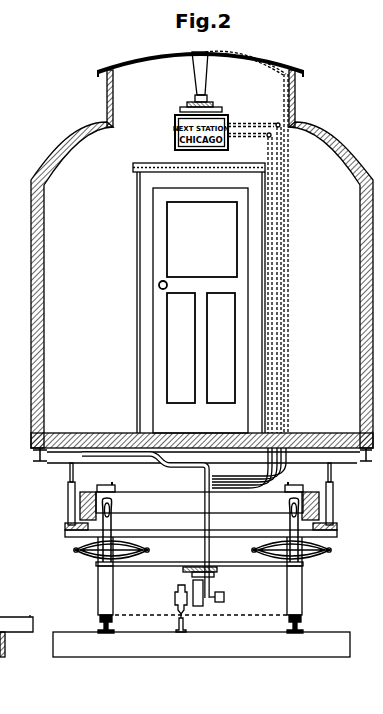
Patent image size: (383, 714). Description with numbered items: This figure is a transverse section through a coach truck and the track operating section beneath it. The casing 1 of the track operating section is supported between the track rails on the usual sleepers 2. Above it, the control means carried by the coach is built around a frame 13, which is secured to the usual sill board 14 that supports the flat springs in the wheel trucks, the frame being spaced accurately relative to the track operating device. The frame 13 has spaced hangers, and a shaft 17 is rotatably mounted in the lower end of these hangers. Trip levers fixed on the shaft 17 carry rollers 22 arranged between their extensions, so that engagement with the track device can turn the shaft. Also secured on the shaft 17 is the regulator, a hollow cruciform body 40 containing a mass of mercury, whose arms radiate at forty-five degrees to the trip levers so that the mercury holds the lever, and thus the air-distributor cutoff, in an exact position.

The casing 1 is at (184, 621).
The sleepers 2 is at (160, 655).
The frame 13 is at (185, 578).
The sill board 14 is at (248, 562).
The shaft 17 is at (226, 597).
The rollers 22 is at (180, 612).
The hollow cruciform body 40 is at (203, 607).